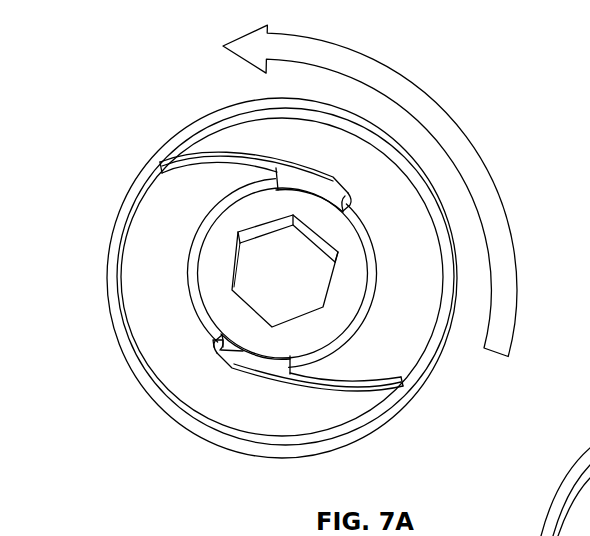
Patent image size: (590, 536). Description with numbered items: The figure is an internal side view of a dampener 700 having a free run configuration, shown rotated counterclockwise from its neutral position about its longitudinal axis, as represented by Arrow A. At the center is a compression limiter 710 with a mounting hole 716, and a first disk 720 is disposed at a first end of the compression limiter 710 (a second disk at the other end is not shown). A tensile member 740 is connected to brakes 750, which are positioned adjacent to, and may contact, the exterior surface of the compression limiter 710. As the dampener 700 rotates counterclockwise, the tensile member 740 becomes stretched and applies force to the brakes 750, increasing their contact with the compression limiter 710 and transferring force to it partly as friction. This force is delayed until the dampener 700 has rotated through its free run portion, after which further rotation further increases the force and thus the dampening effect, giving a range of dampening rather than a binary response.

The dampener 700 is at (255, 275).
The compression limiter 710 is at (223, 296).
The mounting hole 716 is at (288, 277).
The first disk 720 is at (278, 138).
The tensile member 740 is at (243, 150).
The brakes 750 is at (328, 187).
The Arrow A is at (508, 305).